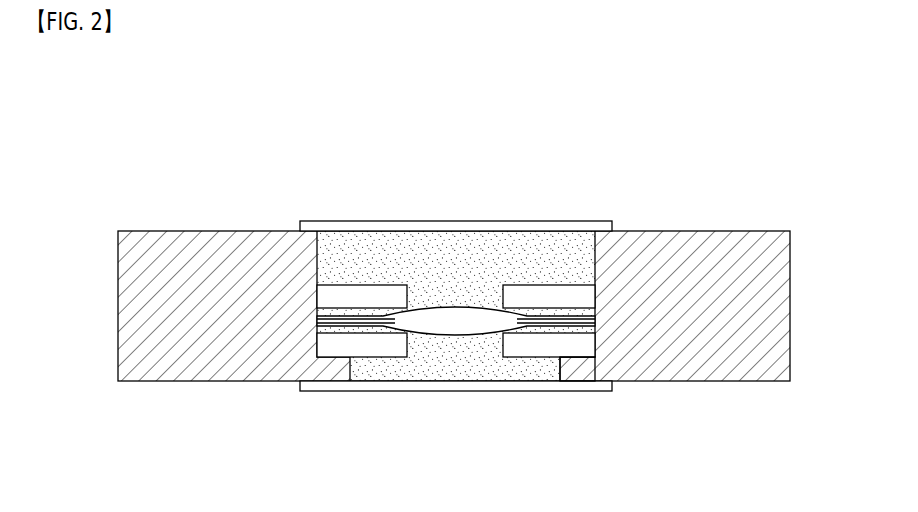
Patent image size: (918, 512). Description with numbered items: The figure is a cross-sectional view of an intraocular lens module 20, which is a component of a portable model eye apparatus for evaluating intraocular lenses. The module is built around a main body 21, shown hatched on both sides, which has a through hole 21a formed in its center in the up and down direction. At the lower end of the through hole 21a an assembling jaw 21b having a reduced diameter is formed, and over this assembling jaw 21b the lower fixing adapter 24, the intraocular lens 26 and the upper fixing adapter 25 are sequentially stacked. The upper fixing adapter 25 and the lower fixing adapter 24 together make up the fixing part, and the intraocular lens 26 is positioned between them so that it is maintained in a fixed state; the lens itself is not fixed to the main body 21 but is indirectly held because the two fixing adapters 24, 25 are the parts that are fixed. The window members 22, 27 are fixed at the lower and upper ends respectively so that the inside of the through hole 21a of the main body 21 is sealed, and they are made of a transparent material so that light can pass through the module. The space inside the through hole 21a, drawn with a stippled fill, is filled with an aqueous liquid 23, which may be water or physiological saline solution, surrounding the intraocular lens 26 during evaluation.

The intraocular lens module 20 is at (152, 139).
The main body 21 is at (687, 243).
The through hole 21a is at (399, 264).
The assembling jaw 21b is at (577, 372).
The window member 22 is at (453, 385).
The aqueous liquid 23 is at (388, 372).
The lower fixing adapter 24 is at (523, 357).
The upper fixing adapter 25 is at (553, 288).
The intraocular lens 26 is at (452, 322).
The window member 27 is at (593, 221).